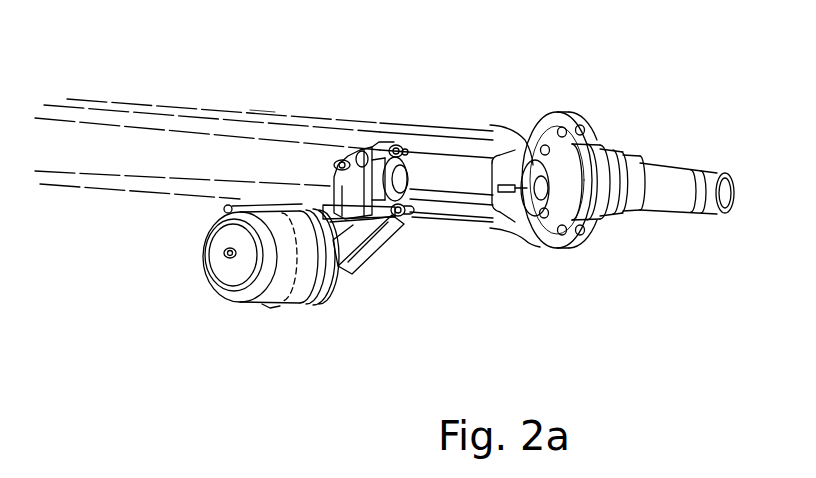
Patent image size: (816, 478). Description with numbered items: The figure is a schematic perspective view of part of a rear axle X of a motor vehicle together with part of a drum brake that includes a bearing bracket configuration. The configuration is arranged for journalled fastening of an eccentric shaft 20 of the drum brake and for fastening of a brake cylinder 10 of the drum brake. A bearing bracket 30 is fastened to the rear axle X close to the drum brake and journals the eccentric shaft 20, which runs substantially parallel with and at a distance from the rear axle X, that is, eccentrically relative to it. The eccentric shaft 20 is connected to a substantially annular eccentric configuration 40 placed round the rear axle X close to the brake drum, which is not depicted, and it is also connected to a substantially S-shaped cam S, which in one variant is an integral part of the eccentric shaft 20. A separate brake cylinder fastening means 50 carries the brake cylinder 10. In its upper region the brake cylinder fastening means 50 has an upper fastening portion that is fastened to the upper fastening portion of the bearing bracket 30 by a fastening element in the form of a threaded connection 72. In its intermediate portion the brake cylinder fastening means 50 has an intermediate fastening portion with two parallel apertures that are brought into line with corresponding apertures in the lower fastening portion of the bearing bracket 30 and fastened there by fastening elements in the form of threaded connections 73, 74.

The brake cylinder 10 is at (233, 305).
The eccentric shaft 20 is at (457, 168).
The bearing bracket 30 is at (368, 142).
The eccentric configuration 40 is at (560, 112).
The brake cylinder fastening means 50 is at (355, 260).
The threaded connection 72 is at (403, 152).
The threaded connection 73 is at (408, 214).
The threaded connection 74 is at (412, 210).
The cam S is at (535, 167).
The rear axle X is at (263, 112).